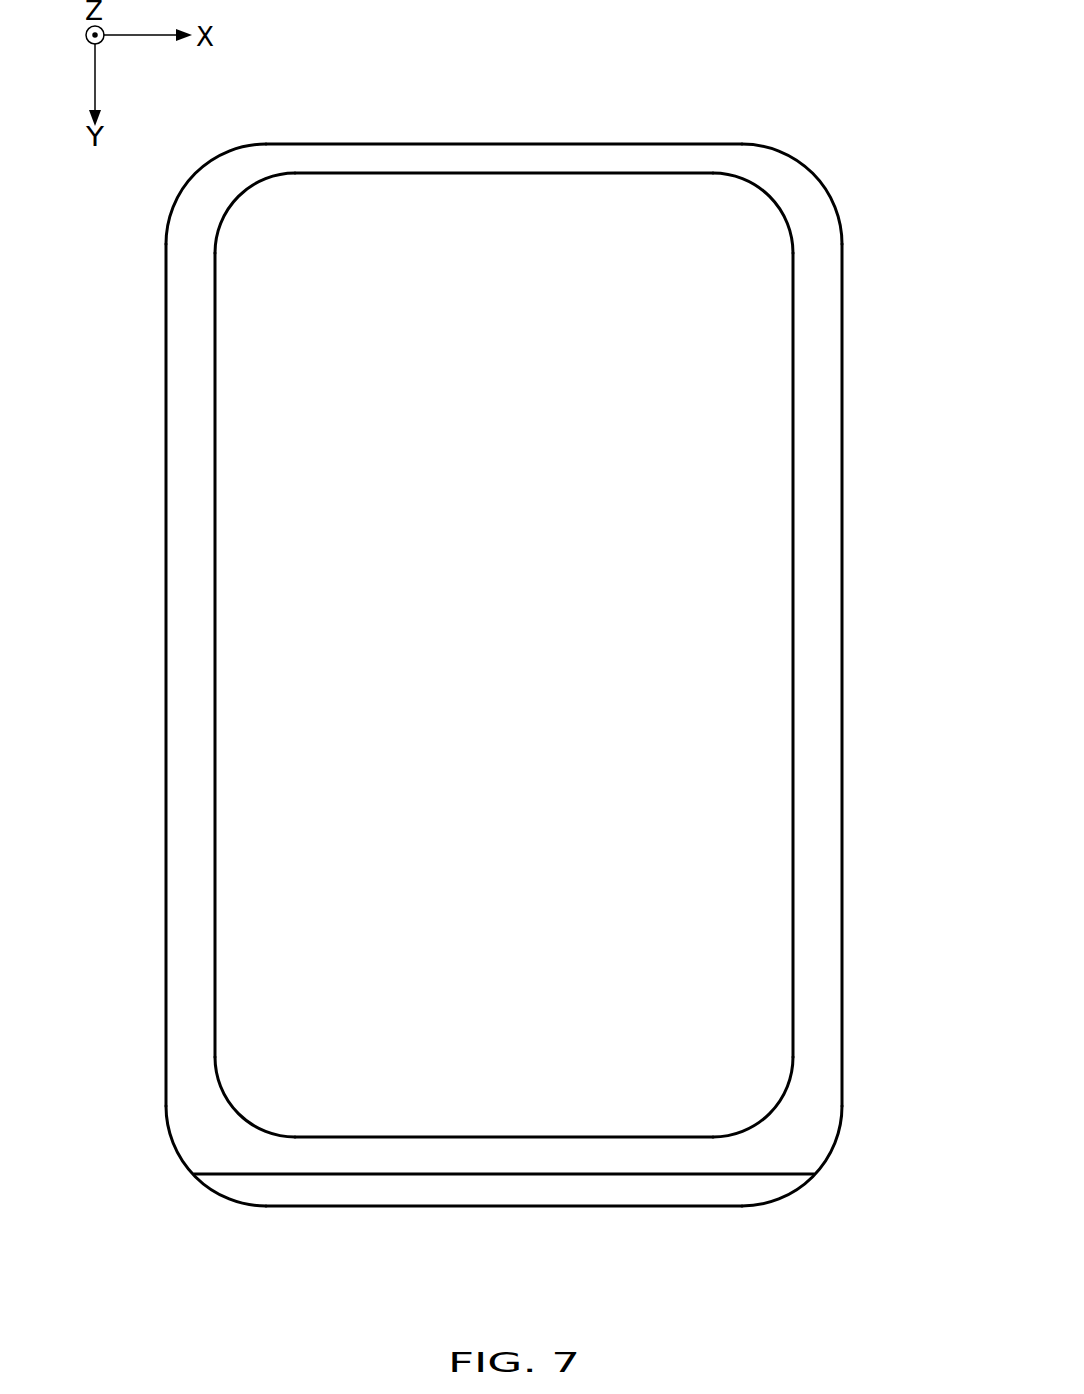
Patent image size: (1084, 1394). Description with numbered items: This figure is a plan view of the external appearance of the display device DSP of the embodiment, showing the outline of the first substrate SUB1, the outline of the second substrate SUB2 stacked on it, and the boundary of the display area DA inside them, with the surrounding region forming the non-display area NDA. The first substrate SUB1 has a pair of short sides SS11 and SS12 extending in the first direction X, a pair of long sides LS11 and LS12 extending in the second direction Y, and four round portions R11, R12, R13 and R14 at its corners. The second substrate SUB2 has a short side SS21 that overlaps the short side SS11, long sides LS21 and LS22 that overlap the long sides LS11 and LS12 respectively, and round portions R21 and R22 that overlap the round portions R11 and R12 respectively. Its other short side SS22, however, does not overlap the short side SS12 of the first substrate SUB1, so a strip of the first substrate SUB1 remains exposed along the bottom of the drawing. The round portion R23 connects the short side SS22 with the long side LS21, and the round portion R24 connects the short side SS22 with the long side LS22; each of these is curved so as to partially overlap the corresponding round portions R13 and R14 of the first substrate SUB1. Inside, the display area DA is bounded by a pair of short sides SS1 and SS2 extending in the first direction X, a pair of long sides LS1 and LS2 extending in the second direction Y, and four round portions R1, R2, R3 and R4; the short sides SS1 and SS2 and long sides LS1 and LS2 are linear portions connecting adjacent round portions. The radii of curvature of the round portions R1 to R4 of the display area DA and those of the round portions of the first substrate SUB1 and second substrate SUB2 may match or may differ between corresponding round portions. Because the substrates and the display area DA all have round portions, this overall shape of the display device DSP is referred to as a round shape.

The display device DSP is at (802, 100).
The display area DA is at (803, 249).
The non-display area NDA is at (824, 325).
The first substrate SUB1 is at (368, 1190).
The second substrate SUB2 is at (180, 953).
The short side of the display area SS1 is at (658, 173).
The short side of the display area SS2 is at (466, 1137).
The long side of the display area LS1 is at (215, 607).
The long side of the display area LS2 is at (793, 608).
The short side of the first substrate SS11 is at (504, 109).
The short side of the first substrate SS12 is at (504, 1248).
The short side of the second substrate SS21 is at (515, 144).
The short side of the second substrate SS22 is at (578, 1207).
The long side of the first substrate LS11 is at (110, 675).
The long side of the first substrate LS12 is at (896, 675).
The long side of the second substrate LS21 is at (166, 680).
The long side of the second substrate LS22 is at (842, 683).
The round portion of the display area R1 is at (243, 200).
The round portion of the display area R2 is at (765, 200).
The round portion of the display area R3 is at (243, 1108).
The round portion of the display area R4 is at (767, 1108).
The round portion of the first substrate R11 is at (199, 177).
The round portion of the first substrate R12 is at (829, 180).
The round portion of the first substrate R13 is at (180, 1183).
The round portion of the first substrate R14 is at (829, 1186).
The round portion of the second substrate R21 is at (200, 170).
The round portion of the second substrate R22 is at (808, 172).
The round portion of the second substrate R23 is at (215, 1195).
The round portion of the second substrate R24 is at (790, 1195).